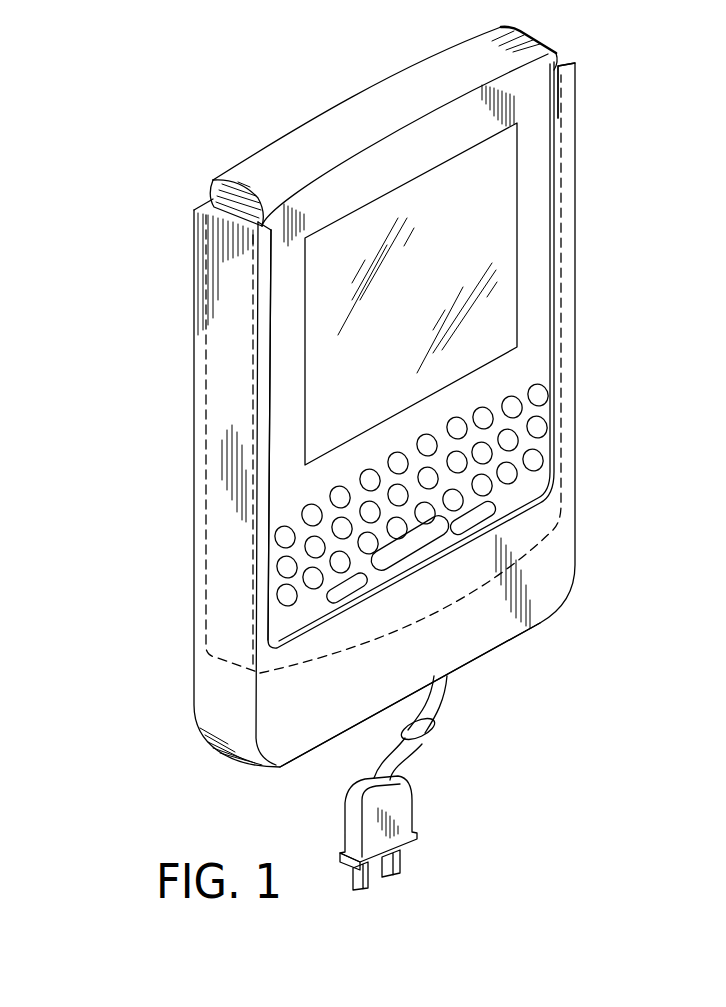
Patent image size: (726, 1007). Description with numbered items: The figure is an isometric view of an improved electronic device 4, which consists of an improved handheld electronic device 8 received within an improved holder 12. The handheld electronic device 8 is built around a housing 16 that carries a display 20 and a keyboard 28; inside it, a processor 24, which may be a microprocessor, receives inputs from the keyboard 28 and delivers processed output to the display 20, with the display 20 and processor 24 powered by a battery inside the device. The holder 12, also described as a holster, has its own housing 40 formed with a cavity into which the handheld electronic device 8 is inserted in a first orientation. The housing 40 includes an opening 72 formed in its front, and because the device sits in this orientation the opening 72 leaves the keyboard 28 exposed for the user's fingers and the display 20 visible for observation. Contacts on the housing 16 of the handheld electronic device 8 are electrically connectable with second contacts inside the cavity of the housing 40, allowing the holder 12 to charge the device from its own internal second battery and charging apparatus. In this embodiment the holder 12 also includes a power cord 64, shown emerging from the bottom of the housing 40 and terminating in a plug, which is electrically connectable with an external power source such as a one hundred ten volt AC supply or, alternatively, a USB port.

The electronic device 4 is at (413, 449).
The handheld electronic device 8 is at (398, 324).
The holder 12 is at (541, 638).
The housing 16 is at (362, 100).
The display 20 is at (453, 157).
The processor 24 is at (288, 145).
The keyboard 28 is at (548, 408).
The housing 40 is at (568, 548).
The power cord 64 is at (446, 693).
The opening 72 is at (557, 160).